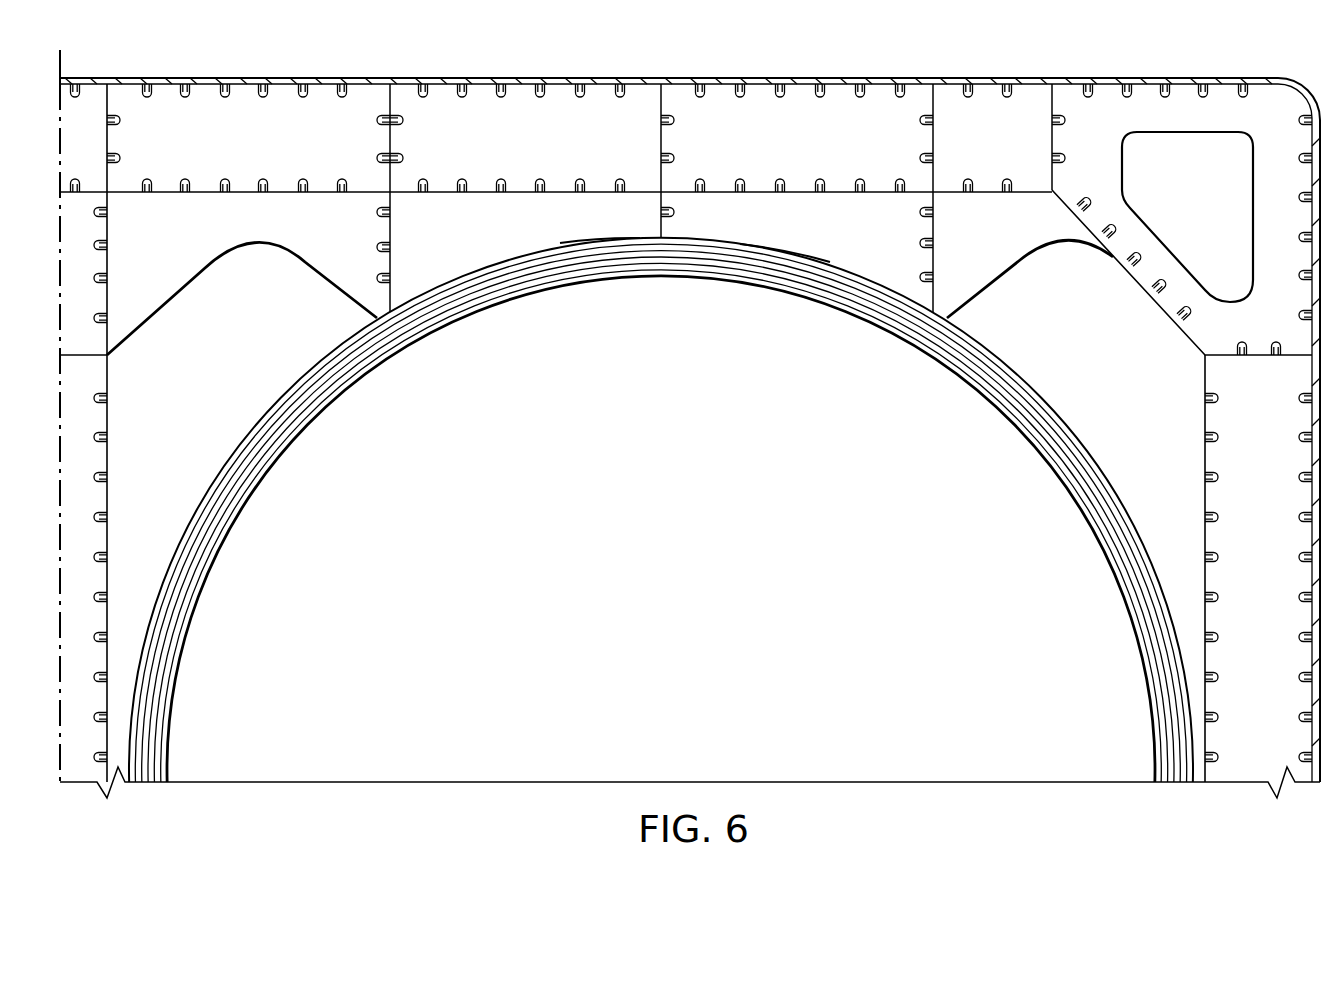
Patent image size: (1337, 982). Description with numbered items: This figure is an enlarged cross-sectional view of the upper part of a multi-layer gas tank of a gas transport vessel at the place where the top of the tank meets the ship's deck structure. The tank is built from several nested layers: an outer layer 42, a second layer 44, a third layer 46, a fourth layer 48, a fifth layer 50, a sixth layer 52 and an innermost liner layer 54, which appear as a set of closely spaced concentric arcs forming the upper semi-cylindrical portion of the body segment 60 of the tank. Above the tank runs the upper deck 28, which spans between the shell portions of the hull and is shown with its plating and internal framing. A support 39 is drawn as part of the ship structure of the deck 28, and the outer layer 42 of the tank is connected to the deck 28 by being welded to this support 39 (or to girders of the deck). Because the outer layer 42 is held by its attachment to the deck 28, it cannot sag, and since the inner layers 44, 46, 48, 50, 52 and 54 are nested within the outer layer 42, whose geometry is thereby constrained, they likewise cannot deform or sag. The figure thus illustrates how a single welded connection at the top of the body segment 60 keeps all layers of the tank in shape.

The upper deck 28 is at (368, 78).
The body segment 60 is at (470, 265).
The outer layer 42 is at (612, 240).
The support 39 is at (797, 238).
The second layer 44 is at (250, 437).
The third layer 46 is at (235, 468).
The fourth layer 48 is at (222, 498).
The fifth layer 50 is at (220, 515).
The sixth layer 52 is at (210, 547).
The liner layer 54 is at (202, 578).